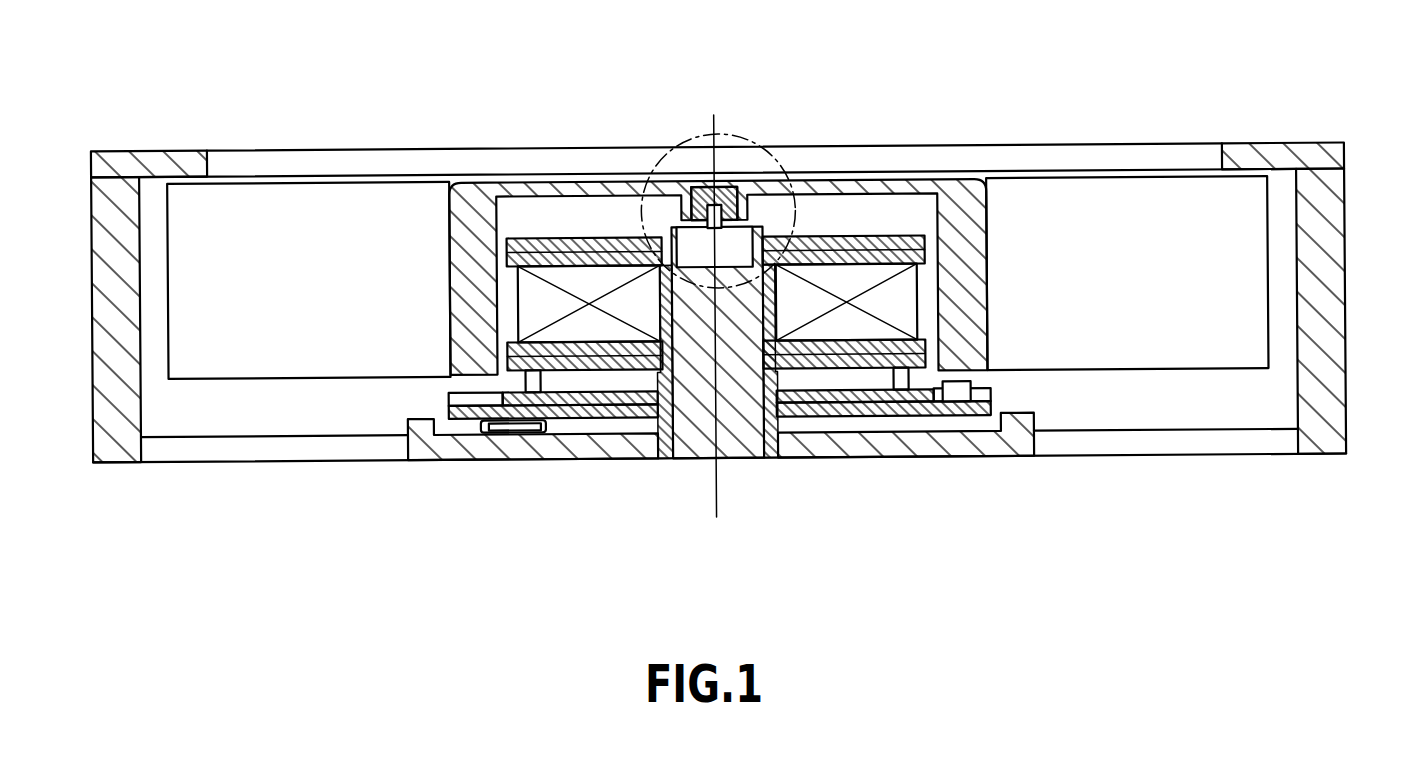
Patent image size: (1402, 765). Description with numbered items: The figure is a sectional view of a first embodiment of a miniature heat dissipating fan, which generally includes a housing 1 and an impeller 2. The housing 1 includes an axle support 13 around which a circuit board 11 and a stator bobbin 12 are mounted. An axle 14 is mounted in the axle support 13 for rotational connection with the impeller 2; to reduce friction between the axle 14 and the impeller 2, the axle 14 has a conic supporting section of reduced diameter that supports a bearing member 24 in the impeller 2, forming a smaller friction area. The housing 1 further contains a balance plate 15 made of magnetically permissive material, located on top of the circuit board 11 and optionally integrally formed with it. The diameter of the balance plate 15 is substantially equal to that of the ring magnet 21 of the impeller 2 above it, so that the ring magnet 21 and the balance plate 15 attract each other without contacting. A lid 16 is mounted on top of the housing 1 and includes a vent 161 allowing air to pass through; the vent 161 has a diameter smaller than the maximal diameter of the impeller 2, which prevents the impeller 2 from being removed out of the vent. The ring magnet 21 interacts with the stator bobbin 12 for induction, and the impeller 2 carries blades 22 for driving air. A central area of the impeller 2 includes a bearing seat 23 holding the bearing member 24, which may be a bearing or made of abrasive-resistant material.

The housing 1 is at (1332, 332).
The impeller 2 is at (782, 173).
The circuit board 11 is at (958, 407).
The stator bobbin 12 is at (890, 237).
The axle support 13 is at (683, 410).
The axle 14 is at (720, 258).
The balance plate 15 is at (883, 403).
The lid 16 is at (1256, 152).
The vent 161 is at (422, 156).
The ring magnet 21 is at (988, 222).
The blades 22 is at (1160, 211).
The bearing seat 23 is at (790, 189).
The bearing member 24 is at (690, 190).